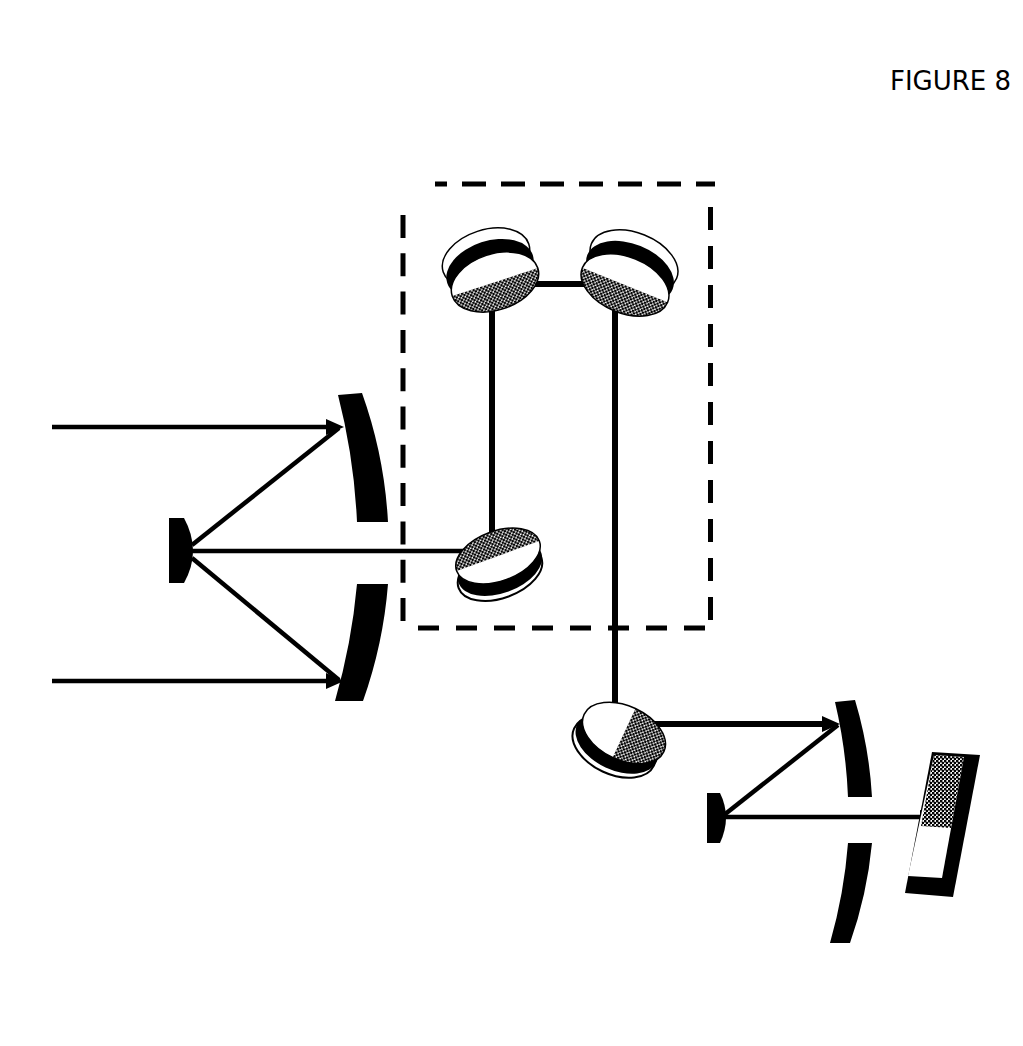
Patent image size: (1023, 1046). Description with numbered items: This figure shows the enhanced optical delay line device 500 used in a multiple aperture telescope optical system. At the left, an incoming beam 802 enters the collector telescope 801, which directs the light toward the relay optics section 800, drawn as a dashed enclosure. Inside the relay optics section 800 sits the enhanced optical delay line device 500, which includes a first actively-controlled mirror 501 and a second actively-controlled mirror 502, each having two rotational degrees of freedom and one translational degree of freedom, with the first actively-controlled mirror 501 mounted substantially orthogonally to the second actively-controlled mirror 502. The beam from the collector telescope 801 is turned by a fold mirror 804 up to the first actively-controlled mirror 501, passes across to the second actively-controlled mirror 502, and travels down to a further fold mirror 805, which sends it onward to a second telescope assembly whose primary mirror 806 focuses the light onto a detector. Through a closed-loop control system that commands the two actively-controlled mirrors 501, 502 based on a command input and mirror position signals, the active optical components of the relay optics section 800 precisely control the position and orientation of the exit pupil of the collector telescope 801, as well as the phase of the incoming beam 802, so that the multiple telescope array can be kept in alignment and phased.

The enhanced optical delay line device 500 is at (623, 406).
The first actively-controlled mirror 501 is at (491, 260).
The second actively-controlled mirror 502 is at (640, 266).
The relay optics section 800 is at (606, 406).
The collector telescope 801 is at (356, 512).
The incoming beam 802 is at (272, 527).
The fold mirror 804 is at (499, 610).
The fold mirror 805 is at (619, 770).
The second primary mirror 806 is at (893, 815).